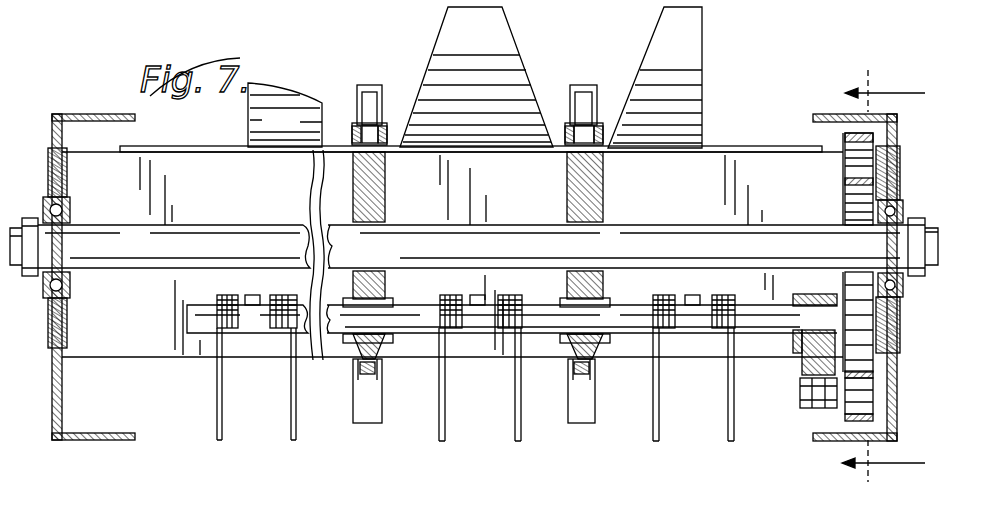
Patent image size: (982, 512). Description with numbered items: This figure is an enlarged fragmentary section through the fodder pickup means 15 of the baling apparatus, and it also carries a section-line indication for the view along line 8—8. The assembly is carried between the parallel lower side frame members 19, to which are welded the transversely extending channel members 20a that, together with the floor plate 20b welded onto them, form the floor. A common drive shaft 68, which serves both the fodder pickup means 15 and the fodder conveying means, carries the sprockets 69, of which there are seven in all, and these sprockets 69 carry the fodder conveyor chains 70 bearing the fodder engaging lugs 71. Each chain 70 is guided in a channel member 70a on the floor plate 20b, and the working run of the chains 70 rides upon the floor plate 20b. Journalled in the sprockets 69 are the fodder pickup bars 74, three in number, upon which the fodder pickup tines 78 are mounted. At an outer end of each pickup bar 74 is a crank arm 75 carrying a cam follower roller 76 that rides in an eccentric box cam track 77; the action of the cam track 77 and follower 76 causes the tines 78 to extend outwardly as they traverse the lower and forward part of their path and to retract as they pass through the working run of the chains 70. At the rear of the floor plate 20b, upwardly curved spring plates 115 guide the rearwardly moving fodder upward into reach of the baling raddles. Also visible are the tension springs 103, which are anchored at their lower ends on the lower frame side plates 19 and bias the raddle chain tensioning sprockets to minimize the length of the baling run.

The fodder pickup means 15 is at (174, 484).
The lower side frame member 19 is at (56, 114).
The channel member 20a is at (716, 204).
The floor plate 20b is at (736, 148).
The drive shaft 68 is at (213, 236).
The sprocket 69 is at (372, 186).
The fodder conveyor chain 70 is at (598, 130).
The channel member 70a is at (340, 128).
The fodder engaging lug 71 is at (362, 88).
The fodder pickup bar 74 is at (416, 330).
The crank arm 75 is at (810, 364).
The cam follower roller 76 is at (842, 401).
The eccentric box cam track 77 is at (855, 166).
The fodder pickup tine 78 is at (292, 410).
The tension spring 103 is at (420, 0).
The spring plate 115 is at (487, 22).
The section line 8- 8 is at (883, 277).